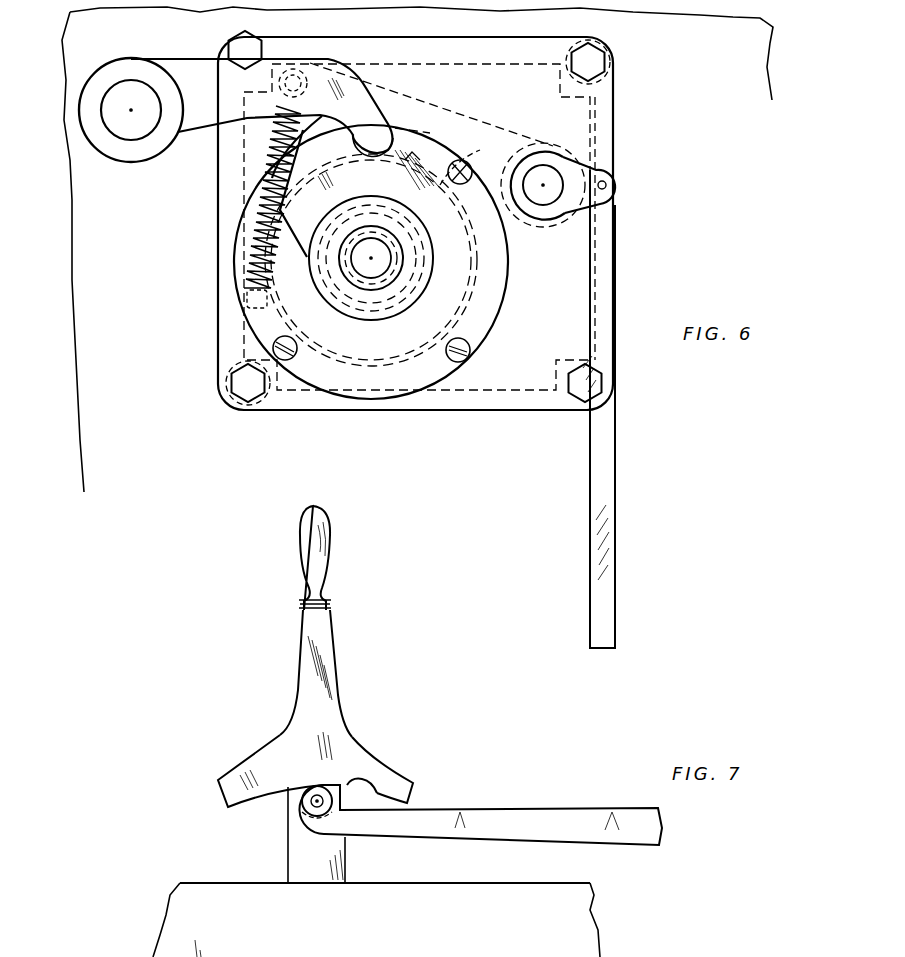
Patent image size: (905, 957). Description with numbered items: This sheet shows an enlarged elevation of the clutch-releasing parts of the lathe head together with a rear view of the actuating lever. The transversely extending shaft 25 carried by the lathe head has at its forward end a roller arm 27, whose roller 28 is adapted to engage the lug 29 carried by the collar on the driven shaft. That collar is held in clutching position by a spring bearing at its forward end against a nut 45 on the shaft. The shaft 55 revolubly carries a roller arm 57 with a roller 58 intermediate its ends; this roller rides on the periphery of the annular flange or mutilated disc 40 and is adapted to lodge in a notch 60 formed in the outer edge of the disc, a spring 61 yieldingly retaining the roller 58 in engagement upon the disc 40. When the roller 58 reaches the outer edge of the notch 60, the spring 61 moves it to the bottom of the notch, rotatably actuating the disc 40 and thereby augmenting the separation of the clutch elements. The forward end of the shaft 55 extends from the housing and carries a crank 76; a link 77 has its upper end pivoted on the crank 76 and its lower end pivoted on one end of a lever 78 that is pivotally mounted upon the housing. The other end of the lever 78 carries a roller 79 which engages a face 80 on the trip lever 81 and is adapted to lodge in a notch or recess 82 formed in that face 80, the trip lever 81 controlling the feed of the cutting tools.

In FIG. 6, the transversely extending shaft 25 is at (122, 118).
In FIG. 6, the roller arm 27 is at (200, 114).
In FIG. 6, the roller 28 is at (392, 112).
In FIG. 6, the lug 29 is at (303, 206).
In FIG. 6, the annular flange 40 is at (478, 252).
In FIG. 6, the nut 45 is at (340, 266).
In FIG. 6, the shaft 55 is at (541, 176).
In FIG. 6, the roller arm 57 is at (480, 140).
In FIG. 6, the roller 58 is at (412, 160).
In FIG. 6, the notch 60 is at (428, 165).
In FIG. 6, the spring 61 is at (244, 212).
In FIG. 6, the crank 76 is at (596, 170).
In FIG. 6, the link 77 is at (600, 245).
In FIG. 7, the lever 78 is at (527, 812).
In FIG. 7, the roller 79 is at (325, 785).
In FIG. 7, the face 80 is at (270, 797).
In FIG. 7, the trip lever 81 is at (318, 657).
In FIG. 7, the notch 82 is at (370, 785).